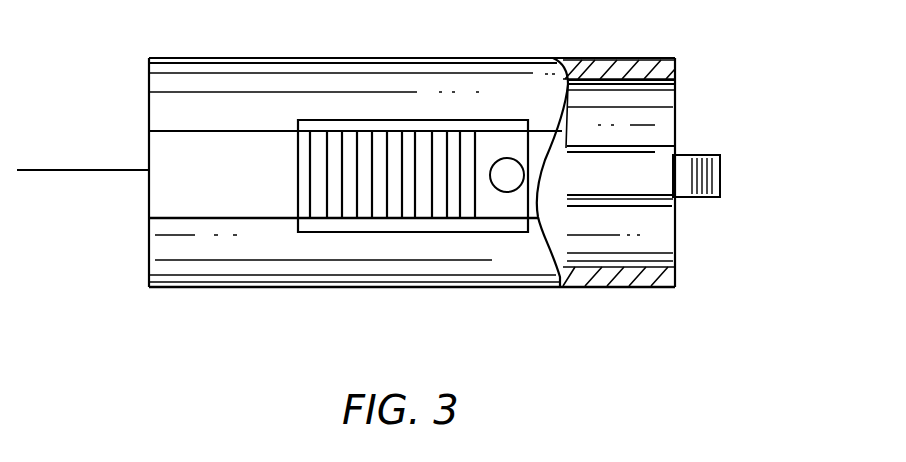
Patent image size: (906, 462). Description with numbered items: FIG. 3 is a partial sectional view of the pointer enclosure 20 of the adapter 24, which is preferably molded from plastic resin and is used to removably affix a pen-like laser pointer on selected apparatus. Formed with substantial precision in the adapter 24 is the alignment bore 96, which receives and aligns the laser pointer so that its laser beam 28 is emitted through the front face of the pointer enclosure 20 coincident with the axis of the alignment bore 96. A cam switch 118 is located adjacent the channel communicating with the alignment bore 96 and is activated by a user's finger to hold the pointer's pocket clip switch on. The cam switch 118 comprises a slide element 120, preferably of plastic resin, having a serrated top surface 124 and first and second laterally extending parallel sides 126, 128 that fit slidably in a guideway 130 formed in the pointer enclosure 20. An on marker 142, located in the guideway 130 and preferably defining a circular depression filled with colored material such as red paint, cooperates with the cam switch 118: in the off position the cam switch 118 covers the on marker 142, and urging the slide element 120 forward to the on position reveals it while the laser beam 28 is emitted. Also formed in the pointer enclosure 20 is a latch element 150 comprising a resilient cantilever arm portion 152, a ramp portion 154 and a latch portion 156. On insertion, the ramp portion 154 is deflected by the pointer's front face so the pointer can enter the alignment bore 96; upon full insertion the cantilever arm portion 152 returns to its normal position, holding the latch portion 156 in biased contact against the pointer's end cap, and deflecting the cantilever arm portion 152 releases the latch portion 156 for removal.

The pointer enclosure 20 is at (511, 73).
The adapter 24 is at (147, 134).
The laser beam 28 is at (93, 172).
The alignment bore 96 is at (640, 82).
The cam switch 118 is at (300, 174).
The slide element 120 is at (345, 124).
The serrated top surface 124 is at (395, 158).
The first laterally extending parallel side 126 is at (459, 132).
The second laterally extending parallel side 128 is at (427, 222).
The guideway 130 is at (237, 196).
The on marker 142 is at (519, 163).
The latch element 150 is at (633, 146).
The resilient cantilever arm portion 152 is at (607, 183).
The ramp portion 154 is at (683, 175).
The latch portion 156 is at (675, 192).